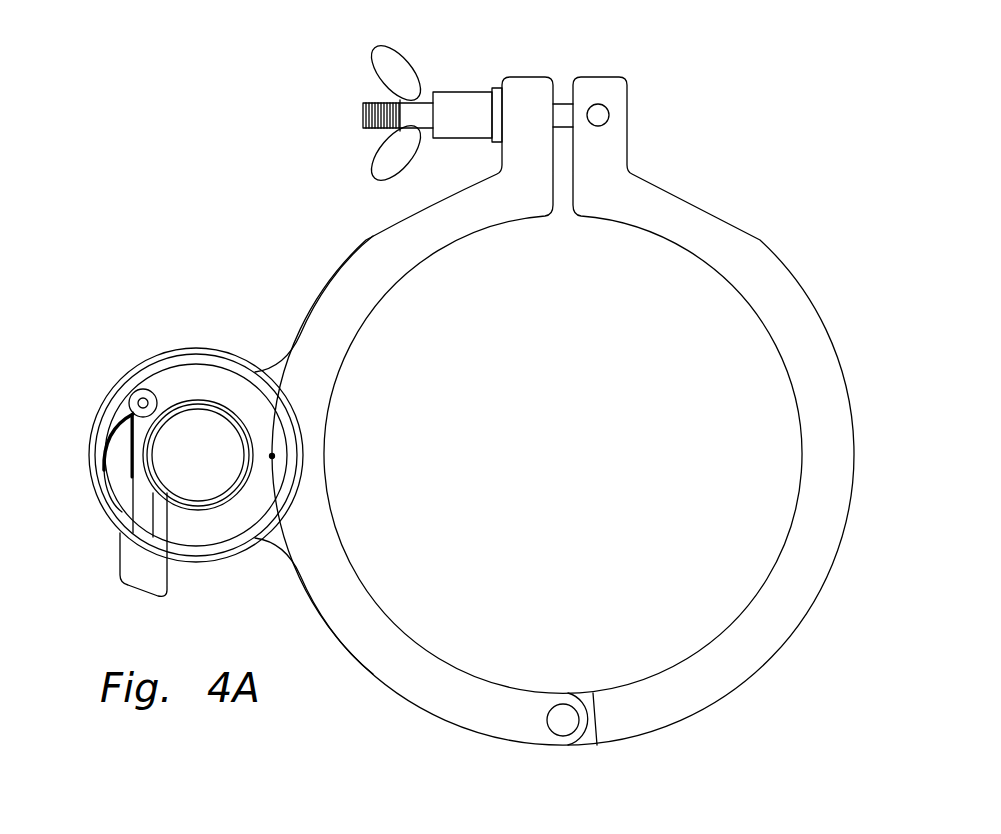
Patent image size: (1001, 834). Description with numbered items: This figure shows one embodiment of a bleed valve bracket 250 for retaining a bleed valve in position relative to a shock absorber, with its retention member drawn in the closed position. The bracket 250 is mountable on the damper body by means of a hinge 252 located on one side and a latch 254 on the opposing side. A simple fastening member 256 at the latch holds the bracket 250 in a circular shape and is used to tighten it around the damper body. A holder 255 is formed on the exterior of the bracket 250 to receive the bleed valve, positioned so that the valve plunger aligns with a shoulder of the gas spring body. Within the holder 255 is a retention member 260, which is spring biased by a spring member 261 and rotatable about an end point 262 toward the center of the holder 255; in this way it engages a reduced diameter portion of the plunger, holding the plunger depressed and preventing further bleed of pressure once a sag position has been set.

The bleed valve bracket 250 is at (737, 217).
The hinge 252 is at (563, 722).
The latch 254 is at (597, 77).
The holder 255 is at (165, 352).
The fastening member 256 is at (455, 92).
The retention member 260 is at (143, 507).
The spring member 261 is at (130, 418).
The end point 262 is at (143, 399).